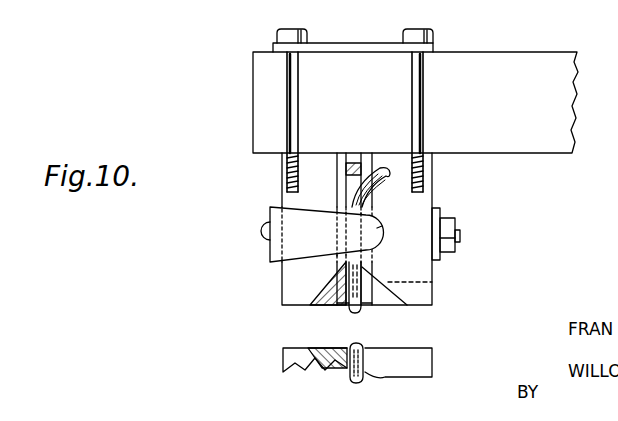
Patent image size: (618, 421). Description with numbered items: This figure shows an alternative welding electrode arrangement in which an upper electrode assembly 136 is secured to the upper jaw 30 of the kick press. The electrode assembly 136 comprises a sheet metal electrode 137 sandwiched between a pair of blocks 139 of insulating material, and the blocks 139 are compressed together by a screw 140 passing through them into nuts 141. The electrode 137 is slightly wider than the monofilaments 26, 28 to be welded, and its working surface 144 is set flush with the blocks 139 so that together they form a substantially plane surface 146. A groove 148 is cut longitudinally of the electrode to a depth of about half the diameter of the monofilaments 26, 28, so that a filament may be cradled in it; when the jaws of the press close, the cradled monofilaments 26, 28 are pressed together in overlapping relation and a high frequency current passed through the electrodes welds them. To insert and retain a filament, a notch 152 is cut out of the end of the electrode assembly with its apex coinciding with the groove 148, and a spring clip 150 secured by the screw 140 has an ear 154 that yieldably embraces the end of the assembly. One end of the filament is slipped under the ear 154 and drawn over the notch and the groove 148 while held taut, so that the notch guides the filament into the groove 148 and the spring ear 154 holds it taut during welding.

The upper jaw 30 is at (415, 102).
The monofilament 28 is at (375, 153).
The sheet metal electrode 137 is at (340, 153).
The upper electrode assembly 136 is at (279, 279).
The spring clip 150 is at (300, 240).
The screw 140 is at (265, 222).
The ear 154 is at (377, 228).
The nut 141 is at (448, 223).
The groove 148 is at (440, 279).
The notch 152 is at (330, 301).
The working surface 144 is at (345, 306).
The plane surface 146 is at (408, 306).
The insulating block 139 is at (282, 289).
The monofilament 26 is at (350, 372).